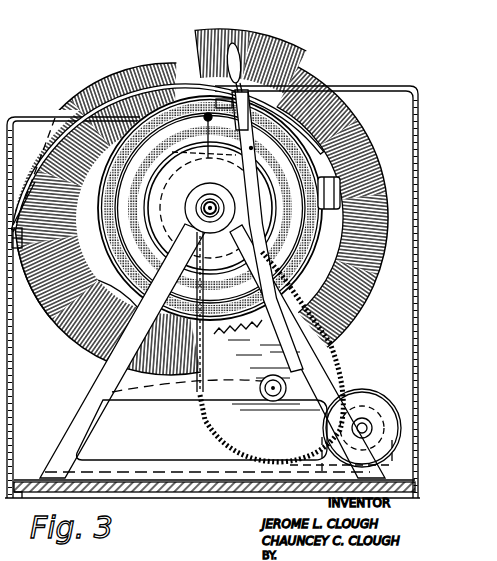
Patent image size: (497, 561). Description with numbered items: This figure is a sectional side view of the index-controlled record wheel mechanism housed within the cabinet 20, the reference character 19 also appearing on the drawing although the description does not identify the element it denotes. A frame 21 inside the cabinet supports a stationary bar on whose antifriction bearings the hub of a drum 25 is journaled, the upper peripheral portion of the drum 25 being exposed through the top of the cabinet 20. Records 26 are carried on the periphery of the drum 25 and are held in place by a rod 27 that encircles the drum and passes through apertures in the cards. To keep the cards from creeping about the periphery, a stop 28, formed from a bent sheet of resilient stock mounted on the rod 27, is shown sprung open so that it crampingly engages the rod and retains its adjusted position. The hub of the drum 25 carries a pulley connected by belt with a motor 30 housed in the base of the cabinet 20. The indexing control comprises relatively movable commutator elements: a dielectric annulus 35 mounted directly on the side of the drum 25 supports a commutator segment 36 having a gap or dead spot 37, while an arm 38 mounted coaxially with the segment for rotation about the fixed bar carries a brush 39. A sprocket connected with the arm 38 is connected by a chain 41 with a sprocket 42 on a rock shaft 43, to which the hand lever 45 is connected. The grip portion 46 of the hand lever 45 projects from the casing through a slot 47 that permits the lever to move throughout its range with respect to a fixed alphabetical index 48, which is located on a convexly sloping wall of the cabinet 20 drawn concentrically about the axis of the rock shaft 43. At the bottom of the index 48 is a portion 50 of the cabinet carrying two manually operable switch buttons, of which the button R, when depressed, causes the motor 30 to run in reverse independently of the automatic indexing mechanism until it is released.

The pendulum pointer arm 19 is at (250, 112).
The cabinet 20 is at (418, 91).
The frame 21 is at (102, 386).
The drum 25 is at (58, 284).
The records 26 is at (62, 314).
The rod 27 is at (372, 264).
The stop 28 is at (378, 236).
The motor 30 is at (376, 400).
The dielectric annulus 35 is at (85, 334).
The commutator segment 36 is at (120, 244).
The gap or dead spot 37 is at (204, 121).
The arm 38 is at (199, 173).
The brush 39 is at (207, 150).
The chain 41 is at (206, 330).
The sprocket 42 is at (226, 441).
The rock shaft 43 is at (214, 417).
The hand lever 45 is at (232, 240).
The grip portion 46 is at (252, 34).
The slot 47 is at (104, 143).
The alphabetical index 48 is at (38, 175).
The portion of the cabinet 50 is at (20, 248).
The switch button R is at (16, 222).